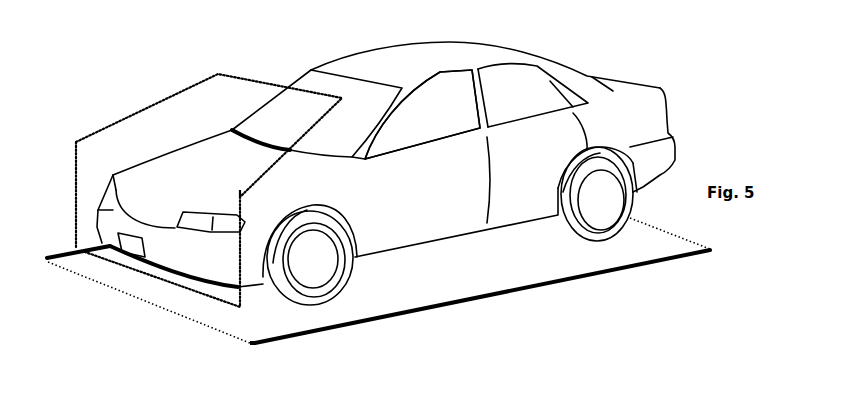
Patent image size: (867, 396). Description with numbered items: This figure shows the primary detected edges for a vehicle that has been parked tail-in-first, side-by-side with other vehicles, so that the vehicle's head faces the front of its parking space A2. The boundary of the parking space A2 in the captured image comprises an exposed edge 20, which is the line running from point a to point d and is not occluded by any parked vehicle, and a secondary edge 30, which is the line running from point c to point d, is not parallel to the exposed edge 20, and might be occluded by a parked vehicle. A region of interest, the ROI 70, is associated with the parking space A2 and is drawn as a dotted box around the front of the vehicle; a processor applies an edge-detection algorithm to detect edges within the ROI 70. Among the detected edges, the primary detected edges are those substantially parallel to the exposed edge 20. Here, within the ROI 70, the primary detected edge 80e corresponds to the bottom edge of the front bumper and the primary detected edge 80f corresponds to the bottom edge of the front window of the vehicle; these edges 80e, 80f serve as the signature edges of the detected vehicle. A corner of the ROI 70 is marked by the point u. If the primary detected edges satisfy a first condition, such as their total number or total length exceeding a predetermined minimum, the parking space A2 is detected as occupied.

The ROI 70 is at (137, 110).
The primary detected edge 80f is at (257, 138).
The primary detected edge 80e is at (157, 267).
The parking space A2 is at (456, 251).
The exposed edge 20 is at (138, 302).
The secondary edge 30 is at (388, 319).
The point a is at (70, 258).
The point c is at (671, 247).
The point d is at (249, 354).
The point u is at (248, 199).